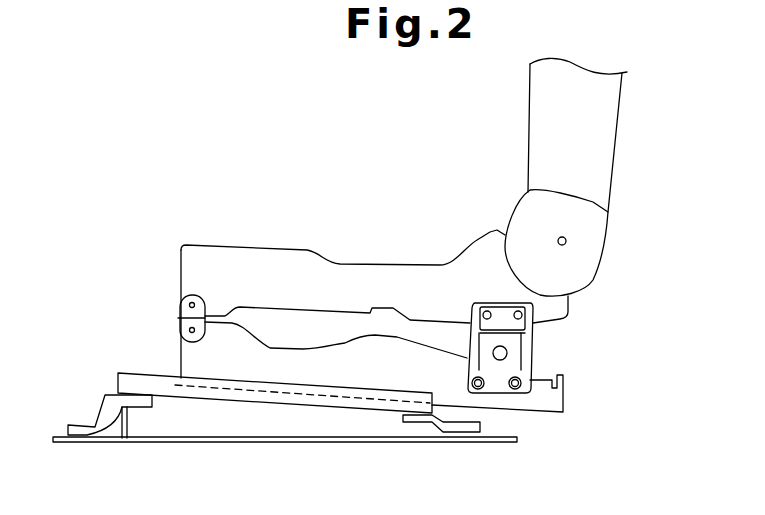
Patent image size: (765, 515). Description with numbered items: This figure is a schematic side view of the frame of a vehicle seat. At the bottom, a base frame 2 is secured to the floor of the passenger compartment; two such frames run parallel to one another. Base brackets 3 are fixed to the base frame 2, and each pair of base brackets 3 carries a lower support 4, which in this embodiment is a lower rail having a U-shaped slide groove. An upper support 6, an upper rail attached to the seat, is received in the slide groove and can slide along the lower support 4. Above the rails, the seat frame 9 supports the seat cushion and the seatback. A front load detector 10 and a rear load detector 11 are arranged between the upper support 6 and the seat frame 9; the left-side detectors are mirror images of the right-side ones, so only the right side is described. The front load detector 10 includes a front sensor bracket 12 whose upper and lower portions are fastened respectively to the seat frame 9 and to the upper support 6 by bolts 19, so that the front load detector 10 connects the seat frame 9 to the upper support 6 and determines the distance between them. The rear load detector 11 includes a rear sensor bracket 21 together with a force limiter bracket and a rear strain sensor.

The base frame 2 is at (150, 443).
The base bracket 3 is at (88, 425).
The lower support 4 is at (118, 372).
The upper support 6 is at (177, 352).
The seat frame 9 is at (277, 250).
The front load detector 10 is at (180, 318).
The rear load detector 11 is at (533, 352).
The front sensor bracket 12 is at (203, 312).
The bolt 19 is at (194, 302).
The rear sensor bracket 21 is at (477, 362).